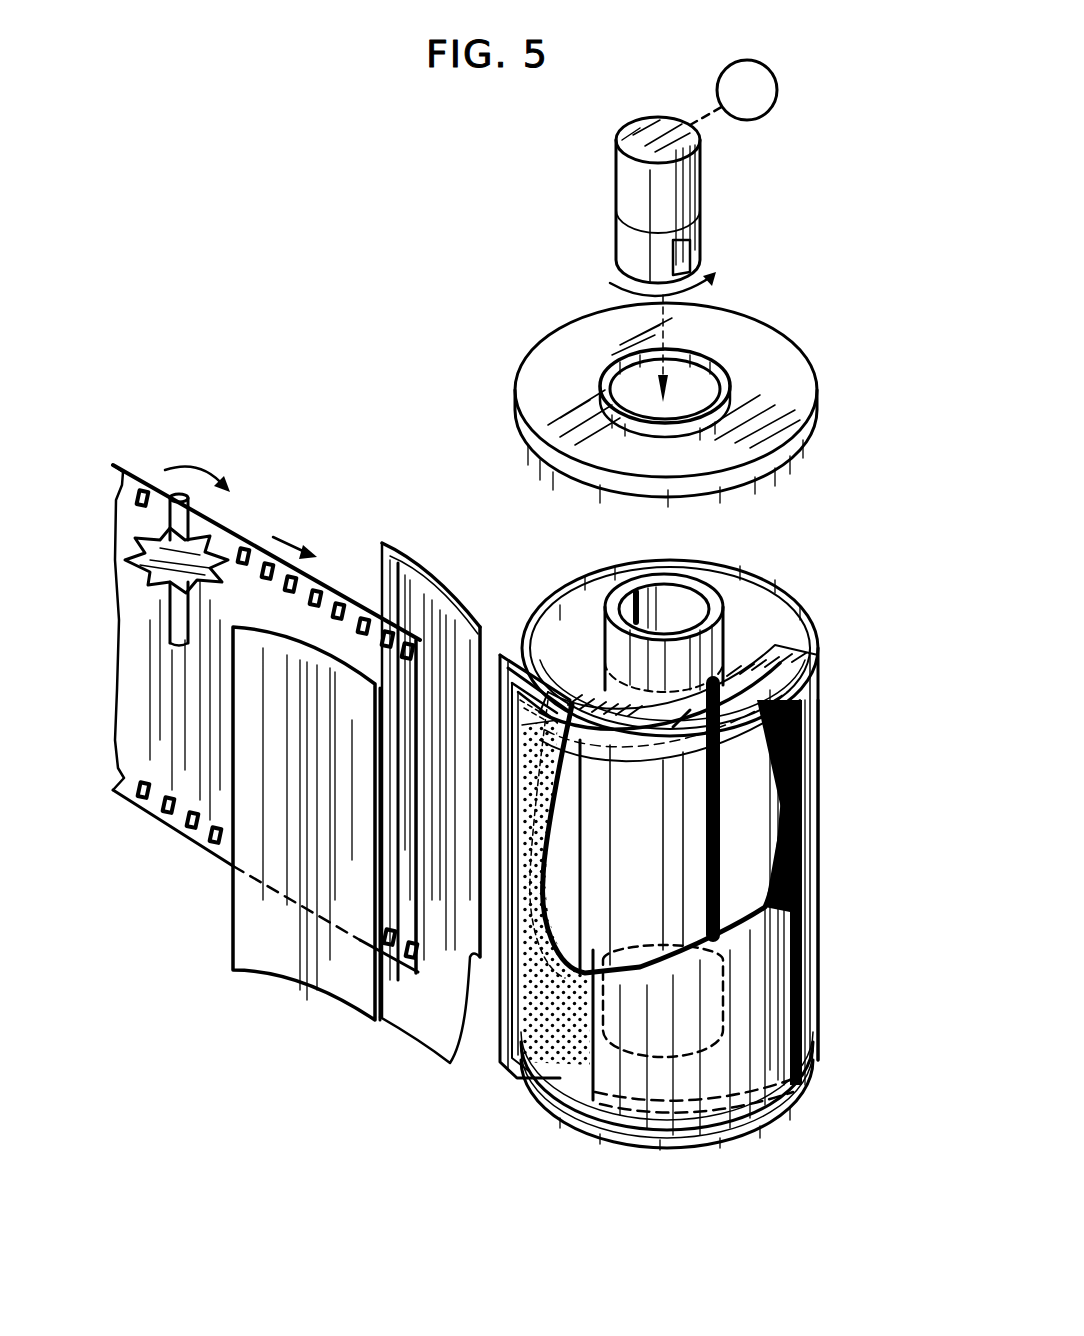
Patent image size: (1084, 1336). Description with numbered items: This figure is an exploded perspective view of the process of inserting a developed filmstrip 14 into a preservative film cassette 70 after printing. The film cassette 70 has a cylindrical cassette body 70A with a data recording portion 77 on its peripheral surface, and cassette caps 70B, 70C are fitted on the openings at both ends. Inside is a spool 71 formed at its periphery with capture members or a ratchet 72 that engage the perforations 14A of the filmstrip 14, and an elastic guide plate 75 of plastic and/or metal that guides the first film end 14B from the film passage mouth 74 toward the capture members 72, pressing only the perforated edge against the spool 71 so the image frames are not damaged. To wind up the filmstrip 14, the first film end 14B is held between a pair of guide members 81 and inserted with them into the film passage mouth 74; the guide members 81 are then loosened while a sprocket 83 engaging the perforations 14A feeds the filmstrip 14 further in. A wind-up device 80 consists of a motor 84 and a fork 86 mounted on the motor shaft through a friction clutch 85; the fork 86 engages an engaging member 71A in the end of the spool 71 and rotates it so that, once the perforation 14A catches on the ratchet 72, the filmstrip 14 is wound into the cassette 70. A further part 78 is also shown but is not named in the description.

The filmstrip 14 is at (238, 532).
The perforations 14A is at (320, 580).
The first film end 14B is at (425, 697).
The preservative film cassette 70 is at (835, 928).
The cassette body 70A is at (800, 860).
The cassette cap 70B is at (818, 396).
The cassette cap 70C is at (790, 1110).
The spool 71 is at (740, 586).
The engaging member 71A is at (642, 588).
The capture members 72 is at (725, 652).
The film passage mouth 74 is at (503, 640).
The elastic guide plate 75 is at (705, 758).
The data recording portion 77 is at (590, 1075).
The film entry slot 78 is at (520, 665).
The wind-up device 80 is at (820, 198).
The guide members 81 is at (430, 1031).
The sprocket 83 is at (168, 592).
The motor 84 is at (777, 92).
The friction clutch 85 is at (700, 170).
The fork 86 is at (700, 232).